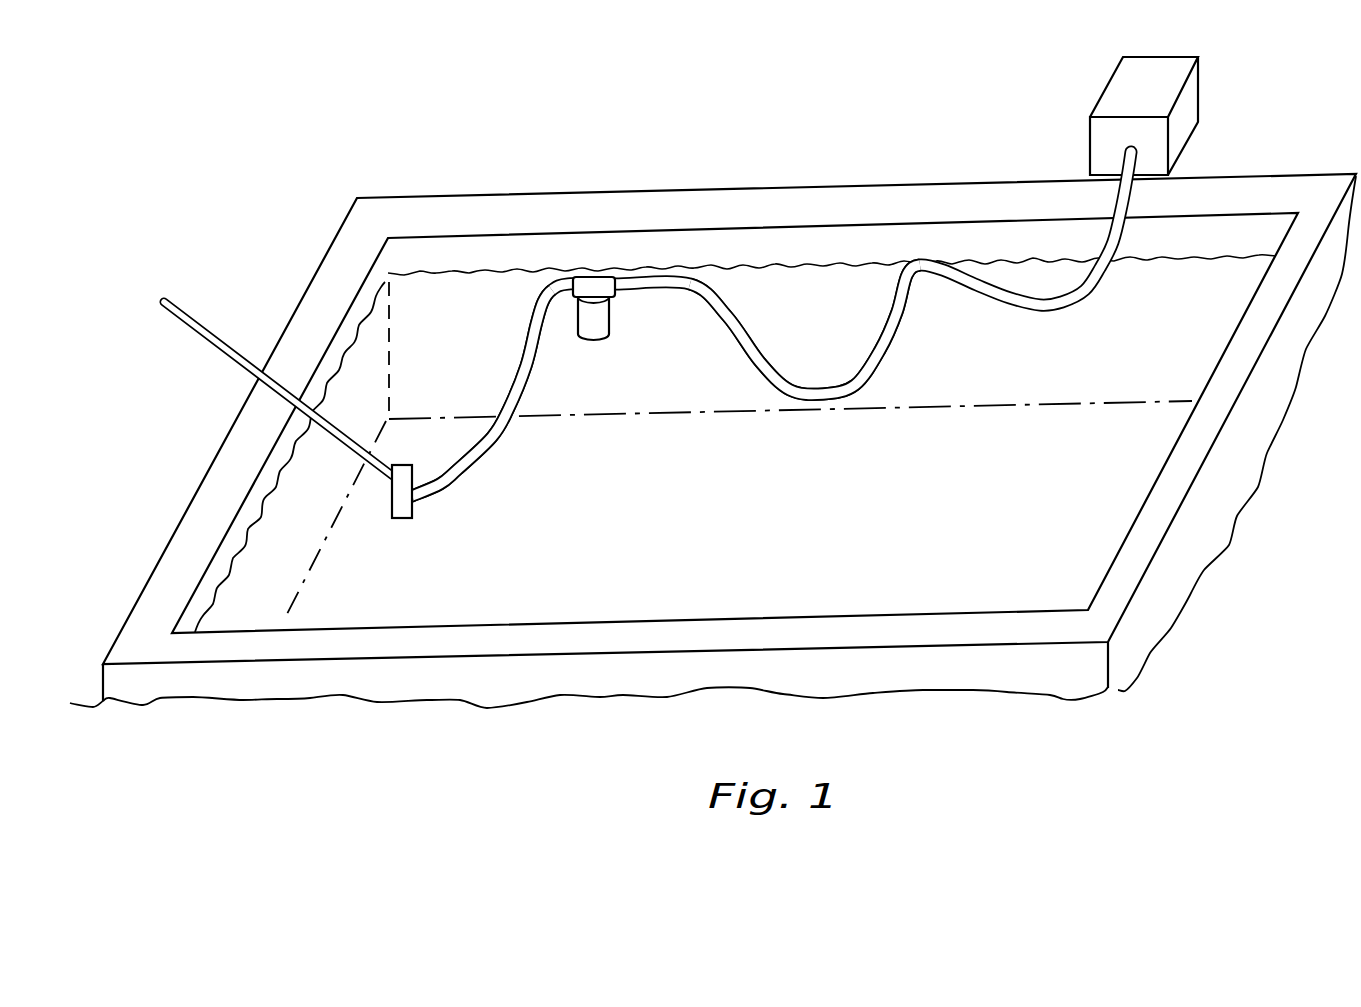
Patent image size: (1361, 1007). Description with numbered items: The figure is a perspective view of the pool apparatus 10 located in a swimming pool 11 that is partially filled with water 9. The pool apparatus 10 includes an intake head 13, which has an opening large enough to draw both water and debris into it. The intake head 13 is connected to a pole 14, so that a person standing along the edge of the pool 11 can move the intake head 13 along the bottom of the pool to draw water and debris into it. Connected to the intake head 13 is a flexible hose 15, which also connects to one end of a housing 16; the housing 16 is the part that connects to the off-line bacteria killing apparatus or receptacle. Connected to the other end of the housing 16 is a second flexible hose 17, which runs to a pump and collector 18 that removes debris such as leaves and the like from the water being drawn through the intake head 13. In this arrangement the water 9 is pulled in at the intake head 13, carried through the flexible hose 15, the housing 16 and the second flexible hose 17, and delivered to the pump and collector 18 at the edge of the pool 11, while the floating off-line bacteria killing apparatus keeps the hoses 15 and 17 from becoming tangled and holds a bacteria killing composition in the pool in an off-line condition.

The water 9 is at (913, 493).
The pool apparatus 10 is at (516, 328).
The swimming pool 11 is at (588, 192).
The intake head 13 is at (395, 516).
The pole 14 is at (183, 313).
The flexible hose 15 is at (498, 427).
The housing 16 is at (612, 295).
The second flexible hose 17 is at (768, 357).
The pump and collector 18 is at (1185, 105).